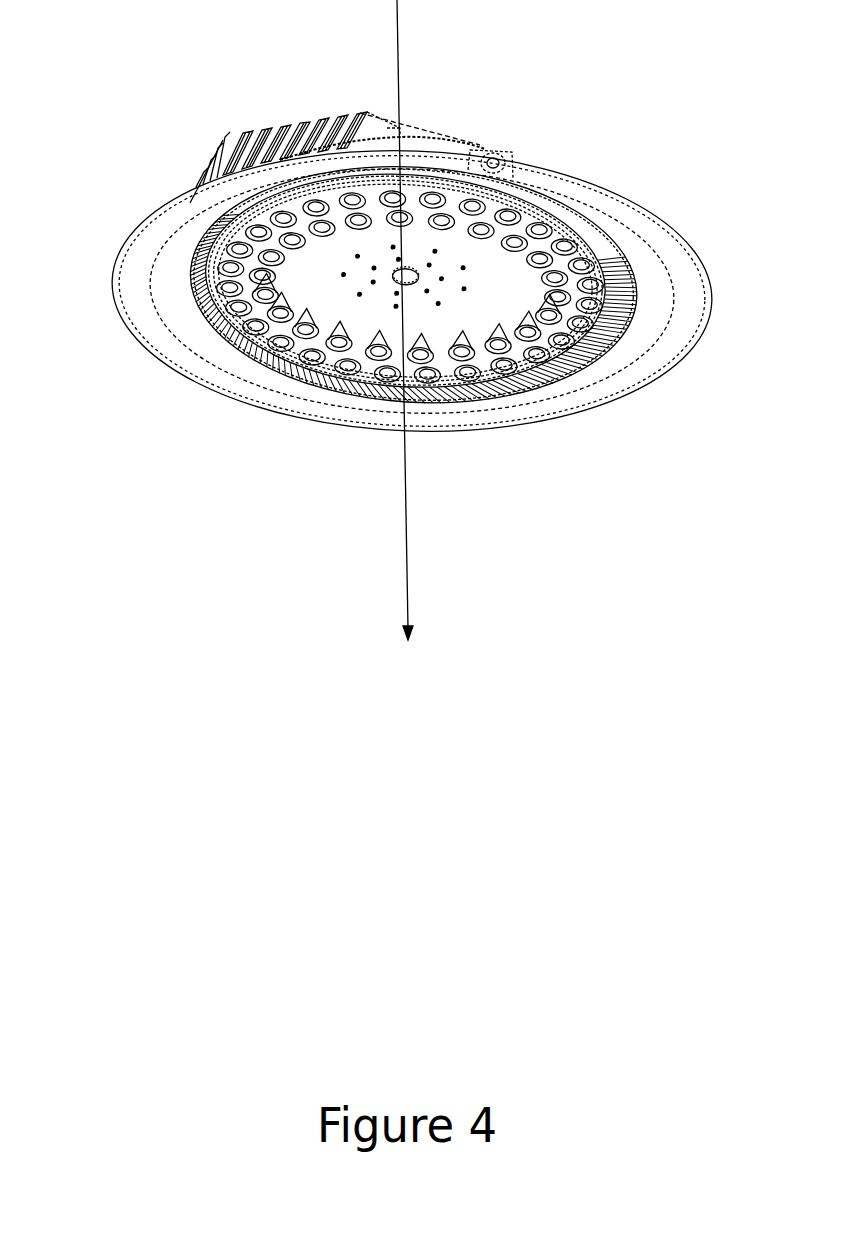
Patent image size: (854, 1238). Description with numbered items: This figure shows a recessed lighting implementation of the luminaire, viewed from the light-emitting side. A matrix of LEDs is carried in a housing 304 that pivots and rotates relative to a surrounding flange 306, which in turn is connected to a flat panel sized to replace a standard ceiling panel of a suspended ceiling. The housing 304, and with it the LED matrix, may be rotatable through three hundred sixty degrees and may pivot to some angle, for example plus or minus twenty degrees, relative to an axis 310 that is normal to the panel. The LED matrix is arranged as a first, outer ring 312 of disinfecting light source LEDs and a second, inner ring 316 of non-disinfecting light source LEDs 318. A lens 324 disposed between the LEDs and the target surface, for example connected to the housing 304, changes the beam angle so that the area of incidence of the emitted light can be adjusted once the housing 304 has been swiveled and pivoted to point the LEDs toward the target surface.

The housing 304 is at (258, 137).
The flange 306 is at (172, 367).
The axis 310 is at (431, 320).
The first (outer) ring 312 is at (578, 371).
The second (inner) ring 316 is at (525, 363).
The non-disinfecting light source LEDs 318 is at (222, 277).
The lens 324 is at (298, 363).